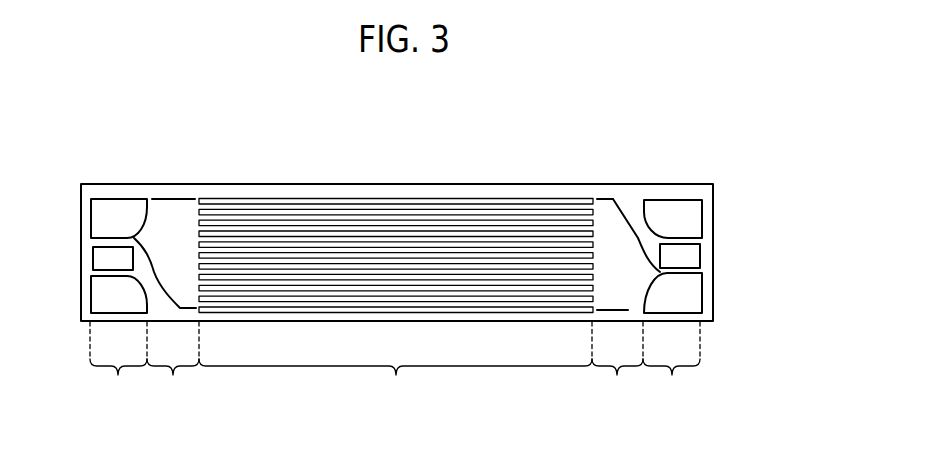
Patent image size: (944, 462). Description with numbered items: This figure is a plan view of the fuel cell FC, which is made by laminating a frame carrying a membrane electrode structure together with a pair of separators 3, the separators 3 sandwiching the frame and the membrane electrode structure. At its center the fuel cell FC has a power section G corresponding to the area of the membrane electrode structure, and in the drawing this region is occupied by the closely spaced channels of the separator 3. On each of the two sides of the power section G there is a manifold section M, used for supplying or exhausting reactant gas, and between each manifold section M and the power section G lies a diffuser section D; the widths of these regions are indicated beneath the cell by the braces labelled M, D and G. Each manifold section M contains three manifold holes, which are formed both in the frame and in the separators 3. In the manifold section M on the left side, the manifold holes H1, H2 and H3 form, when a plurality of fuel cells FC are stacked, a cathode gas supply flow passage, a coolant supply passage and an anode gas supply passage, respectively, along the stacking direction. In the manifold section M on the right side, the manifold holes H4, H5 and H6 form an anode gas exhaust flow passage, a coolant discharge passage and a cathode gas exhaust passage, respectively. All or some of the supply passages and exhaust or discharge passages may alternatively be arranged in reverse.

The fuel cell FC is at (470, 176).
The separator 3 is at (375, 200).
The manifold hole H1 is at (98, 220).
The manifold hole H2 is at (98, 254).
The manifold hole H3 is at (98, 286).
The manifold hole H4 is at (688, 216).
The manifold hole H5 is at (688, 250).
The manifold hole H6 is at (688, 283).
The manifold section M is at (395, 383).
The diffuser section D is at (395, 383).
The power section G is at (395, 383).